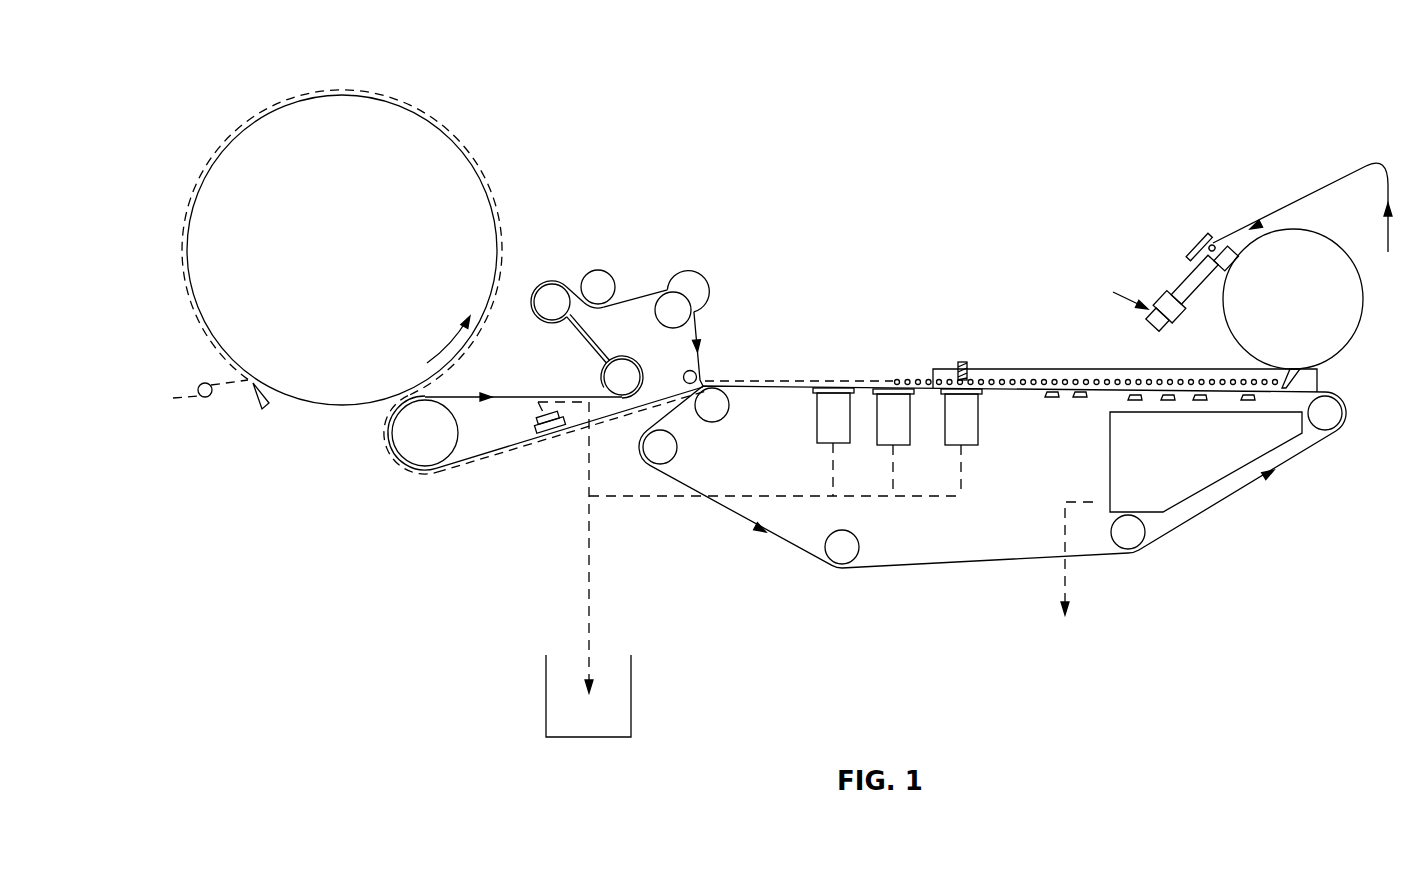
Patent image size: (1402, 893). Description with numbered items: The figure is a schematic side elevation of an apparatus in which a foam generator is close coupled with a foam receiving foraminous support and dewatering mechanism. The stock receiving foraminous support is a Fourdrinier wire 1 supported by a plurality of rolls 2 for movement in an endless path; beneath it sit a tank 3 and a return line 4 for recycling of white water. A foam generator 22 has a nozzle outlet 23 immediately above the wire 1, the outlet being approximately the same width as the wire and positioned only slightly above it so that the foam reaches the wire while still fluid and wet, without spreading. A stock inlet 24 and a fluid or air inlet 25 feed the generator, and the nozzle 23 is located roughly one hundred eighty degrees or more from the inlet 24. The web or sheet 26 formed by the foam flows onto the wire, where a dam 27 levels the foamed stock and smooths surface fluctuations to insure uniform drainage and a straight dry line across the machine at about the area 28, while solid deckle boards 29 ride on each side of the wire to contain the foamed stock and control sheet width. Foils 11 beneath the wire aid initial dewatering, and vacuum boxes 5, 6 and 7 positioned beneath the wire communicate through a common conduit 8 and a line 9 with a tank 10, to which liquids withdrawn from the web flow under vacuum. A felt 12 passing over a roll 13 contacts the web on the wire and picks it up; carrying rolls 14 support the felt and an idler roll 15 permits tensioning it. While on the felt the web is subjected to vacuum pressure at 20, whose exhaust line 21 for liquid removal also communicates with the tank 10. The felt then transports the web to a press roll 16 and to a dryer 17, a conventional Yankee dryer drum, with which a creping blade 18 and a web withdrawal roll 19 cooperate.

The stock receiving foraminous support 1 is at (1243, 487).
The rolls 2 is at (706, 413).
The tank 3 is at (1157, 467).
The return line 4 is at (1065, 568).
The vacuum box 5 is at (954, 432).
The vacuum box 6 is at (886, 432).
The vacuum box 7 is at (826, 431).
The common conduit 8 is at (630, 497).
The line 9 is at (588, 530).
The tank 10 is at (632, 692).
The foils 11 is at (1080, 400).
The felt 12 is at (703, 353).
The roll 13 is at (688, 372).
The carrying rolls 14 is at (547, 298).
The idler roll 15 is at (603, 290).
The press roll 16 is at (412, 445).
The dryer 17 is at (327, 263).
The creping blade 18 is at (257, 402).
The web withdrawal roll 19 is at (201, 398).
The vacuum pressure location 20 is at (523, 420).
The exhaust line 21 is at (588, 447).
The foam generator 22 is at (1279, 311).
The nozzle outlet 23 is at (1310, 378).
The stock inlet 24 is at (1142, 310).
The fluid or air inlet 25 is at (1213, 246).
The web 26 is at (188, 398).
The dam 27 is at (960, 362).
The dry line area 28 is at (893, 381).
The deckle boards 29 is at (1055, 369).